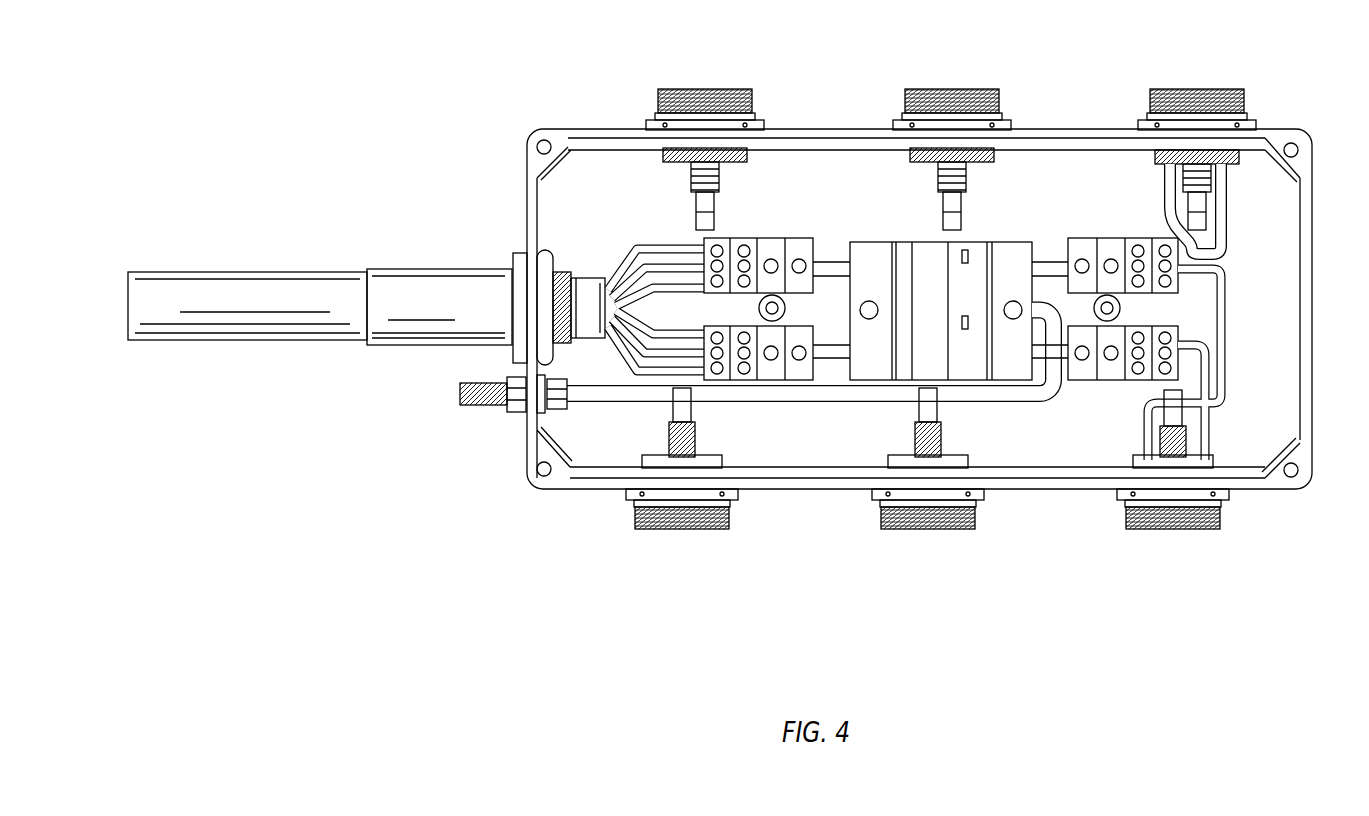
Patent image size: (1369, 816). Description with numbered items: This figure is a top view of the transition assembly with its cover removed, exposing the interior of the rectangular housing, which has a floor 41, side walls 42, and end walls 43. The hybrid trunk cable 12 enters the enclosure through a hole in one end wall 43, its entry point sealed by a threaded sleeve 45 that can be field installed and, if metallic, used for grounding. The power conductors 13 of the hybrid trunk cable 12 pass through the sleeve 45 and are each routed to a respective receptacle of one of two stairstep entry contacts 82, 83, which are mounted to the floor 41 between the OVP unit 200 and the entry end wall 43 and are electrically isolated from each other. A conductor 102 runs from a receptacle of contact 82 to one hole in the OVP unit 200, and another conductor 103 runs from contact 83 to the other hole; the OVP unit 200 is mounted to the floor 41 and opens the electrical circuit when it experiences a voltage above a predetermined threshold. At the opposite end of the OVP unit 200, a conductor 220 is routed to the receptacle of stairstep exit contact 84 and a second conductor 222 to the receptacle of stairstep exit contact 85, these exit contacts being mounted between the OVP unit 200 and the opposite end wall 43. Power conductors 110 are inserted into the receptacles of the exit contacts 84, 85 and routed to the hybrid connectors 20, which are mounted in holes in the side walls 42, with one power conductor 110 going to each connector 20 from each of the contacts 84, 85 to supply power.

The hybrid trunk cable 12 is at (285, 322).
The threaded sleeve 45 is at (440, 333).
The end wall 43 is at (530, 436).
The power conductors 13 is at (630, 250).
The stairstep entry contact 82 is at (748, 240).
The stairstep entry contact 83 is at (772, 373).
The stairstep exit contact 84 is at (1196, 282).
The stairstep exit contact 85 is at (1198, 338).
The floor 41 is at (800, 175).
The side walls 42 is at (800, 487).
The conductor 102 is at (820, 240).
The conductor 103 is at (833, 355).
The OVP unit 200 is at (905, 258).
The conductor 220 is at (1040, 265).
The second conductor 222 is at (1045, 355).
The power conductors 110 is at (1167, 210).
The hybrid connectors 20 is at (680, 532).